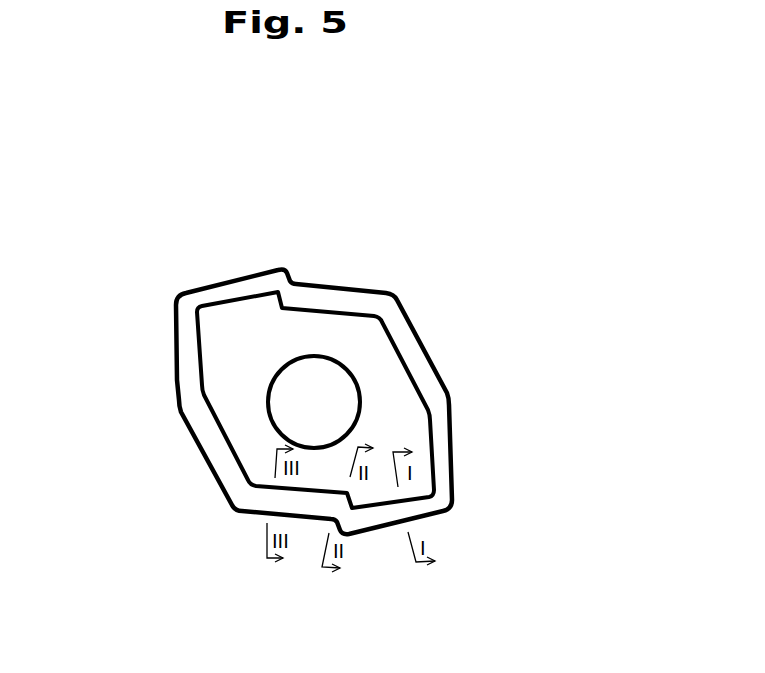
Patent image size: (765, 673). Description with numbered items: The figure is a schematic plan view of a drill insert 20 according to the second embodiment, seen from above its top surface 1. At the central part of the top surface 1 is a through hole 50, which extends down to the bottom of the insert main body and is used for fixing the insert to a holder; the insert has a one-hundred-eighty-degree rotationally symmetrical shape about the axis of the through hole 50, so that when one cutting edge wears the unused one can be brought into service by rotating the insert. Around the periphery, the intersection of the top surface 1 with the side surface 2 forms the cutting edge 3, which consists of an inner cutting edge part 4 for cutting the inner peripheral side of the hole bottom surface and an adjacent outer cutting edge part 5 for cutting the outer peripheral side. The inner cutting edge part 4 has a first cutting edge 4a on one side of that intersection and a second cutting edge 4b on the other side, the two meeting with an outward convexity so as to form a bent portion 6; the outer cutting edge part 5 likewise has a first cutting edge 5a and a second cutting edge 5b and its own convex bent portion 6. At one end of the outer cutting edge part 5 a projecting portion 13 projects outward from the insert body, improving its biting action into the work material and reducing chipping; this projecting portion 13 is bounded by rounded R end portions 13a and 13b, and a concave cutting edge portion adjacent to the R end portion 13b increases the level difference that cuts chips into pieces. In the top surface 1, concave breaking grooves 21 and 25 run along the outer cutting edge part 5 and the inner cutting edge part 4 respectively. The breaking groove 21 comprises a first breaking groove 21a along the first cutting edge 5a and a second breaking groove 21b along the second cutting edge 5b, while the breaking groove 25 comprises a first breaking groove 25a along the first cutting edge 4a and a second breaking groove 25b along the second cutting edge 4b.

The insert 20 is at (305, 406).
The cutting edge 3 is at (299, 411).
The inner cutting edge part 4 is at (168, 525).
The first cutting edge 4a is at (448, 268).
The second cutting edge 4b is at (507, 390).
The outer cutting edge part 5 is at (400, 222).
The first cutting edge 5a is at (460, 594).
The second cutting edge 5b is at (334, 592).
The projecting portion 13 is at (200, 270).
The R end portion 13a is at (172, 298).
The R end portion 13b is at (283, 267).
The side surface 2 is at (175, 357).
The bent portion 6 is at (292, 283).
The top surface 1 is at (222, 350).
The breaking groove 21 is at (237, 288).
The first breaking groove 21a is at (392, 513).
The second breaking groove 21b is at (275, 500).
The breaking groove 25 is at (222, 452).
The first breaking groove 25a is at (405, 348).
The second breaking groove 25b is at (442, 455).
The through hole 50 is at (293, 407).